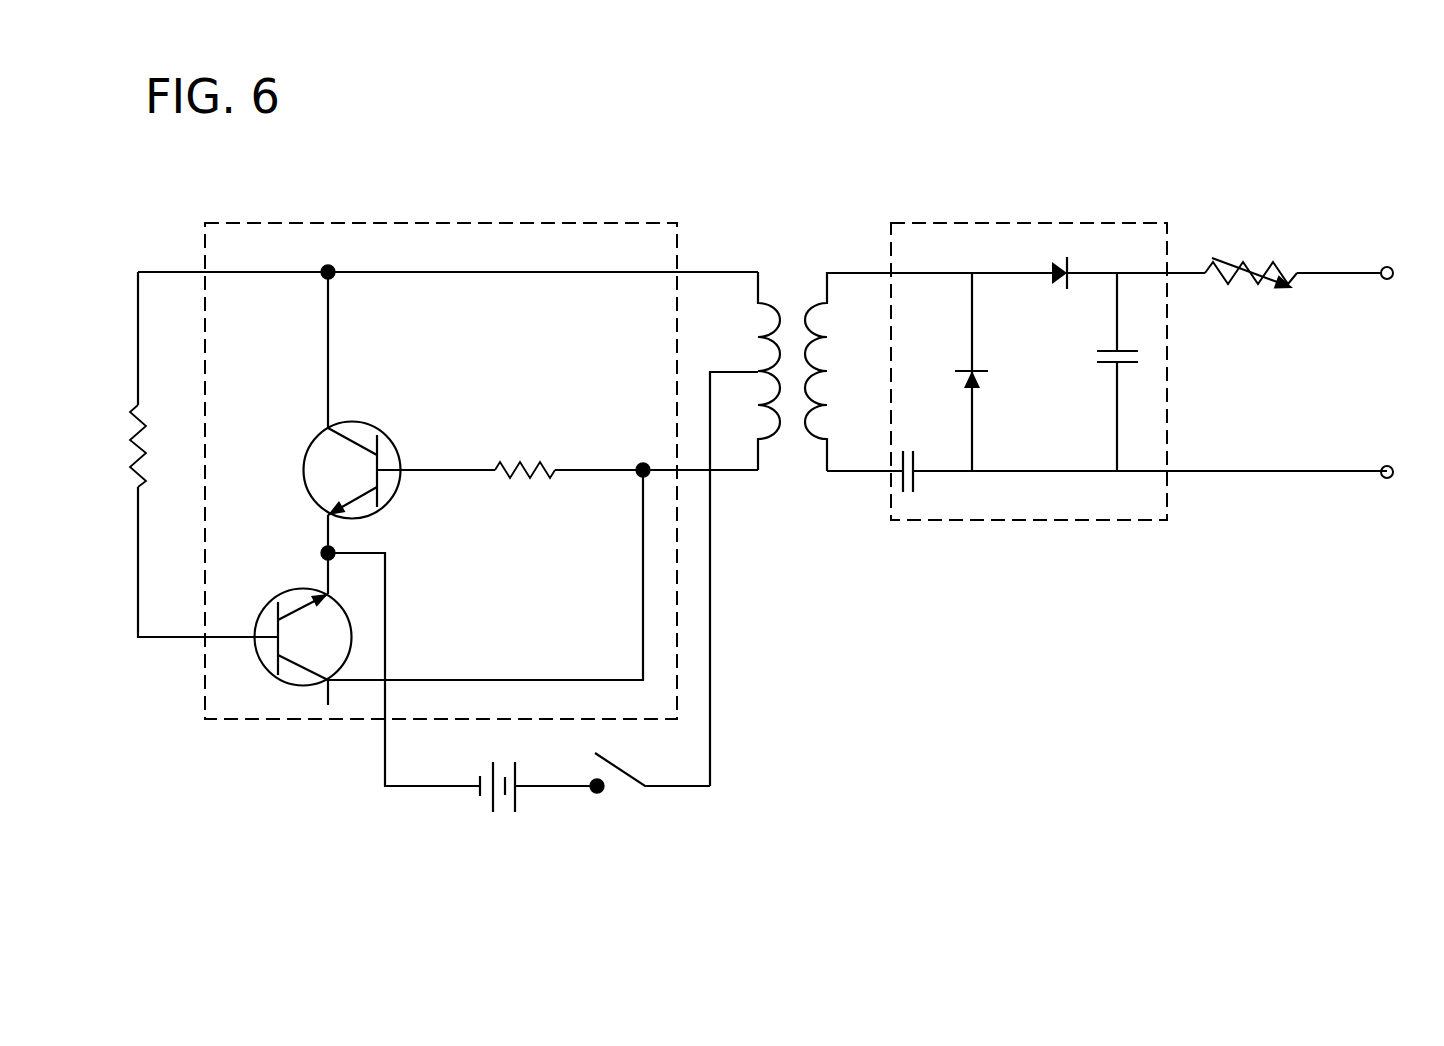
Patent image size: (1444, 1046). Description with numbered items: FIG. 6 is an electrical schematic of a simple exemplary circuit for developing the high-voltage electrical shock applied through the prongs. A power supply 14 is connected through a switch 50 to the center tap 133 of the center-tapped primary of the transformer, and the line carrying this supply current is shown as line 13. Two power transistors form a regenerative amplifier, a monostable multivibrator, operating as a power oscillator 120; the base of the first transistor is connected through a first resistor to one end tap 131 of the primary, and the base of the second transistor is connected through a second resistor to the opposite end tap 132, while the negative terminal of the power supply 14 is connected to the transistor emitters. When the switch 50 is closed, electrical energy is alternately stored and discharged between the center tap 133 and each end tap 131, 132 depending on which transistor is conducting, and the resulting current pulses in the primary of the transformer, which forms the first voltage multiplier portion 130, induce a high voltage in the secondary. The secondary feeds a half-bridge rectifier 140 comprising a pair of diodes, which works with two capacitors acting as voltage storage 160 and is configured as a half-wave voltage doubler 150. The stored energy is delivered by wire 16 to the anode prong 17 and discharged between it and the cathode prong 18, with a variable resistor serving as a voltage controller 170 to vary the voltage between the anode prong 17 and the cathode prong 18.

The oscillator 120 is at (450, 222).
The voltage multiplier portion 130 is at (762, 389).
The end tap 131 is at (757, 472).
The end tap 132 is at (758, 272).
The center tap 133 is at (760, 374).
The half-bridge rectifier 140 is at (1057, 222).
The half-wave voltage doubler 150 is at (955, 521).
The voltage storage 160 is at (1068, 521).
The voltage controller 170 is at (1250, 265).
The wire 16 is at (1350, 268).
The anode prong 17 is at (1393, 266).
The cathode prong 18 is at (1394, 467).
The power supply line 13 is at (417, 788).
The power supply 14 is at (538, 801).
The switch 50 is at (650, 788).